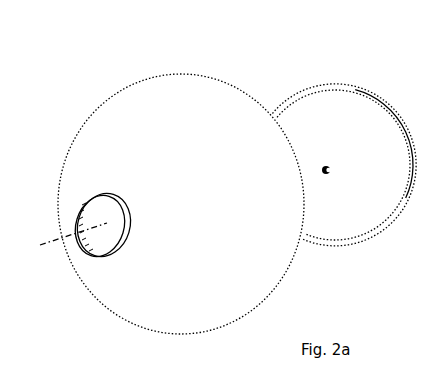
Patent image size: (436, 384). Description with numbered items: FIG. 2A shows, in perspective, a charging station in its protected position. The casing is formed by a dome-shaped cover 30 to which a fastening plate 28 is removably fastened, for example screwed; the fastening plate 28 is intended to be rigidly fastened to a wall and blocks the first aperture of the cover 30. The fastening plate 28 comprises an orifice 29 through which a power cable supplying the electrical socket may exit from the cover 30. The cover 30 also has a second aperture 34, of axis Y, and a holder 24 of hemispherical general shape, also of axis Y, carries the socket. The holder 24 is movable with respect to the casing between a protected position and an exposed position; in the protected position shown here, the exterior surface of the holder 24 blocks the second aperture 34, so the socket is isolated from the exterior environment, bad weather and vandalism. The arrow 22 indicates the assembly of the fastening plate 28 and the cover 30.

The dome-shaped cover 30 is at (173, 95).
The annular member 22 is at (275, 95).
The fastening plate 28 is at (346, 122).
The orifice 29 is at (333, 170).
The holder 24 is at (102, 206).
The second aperture 34 is at (102, 240).
The axis Y is at (59, 242).